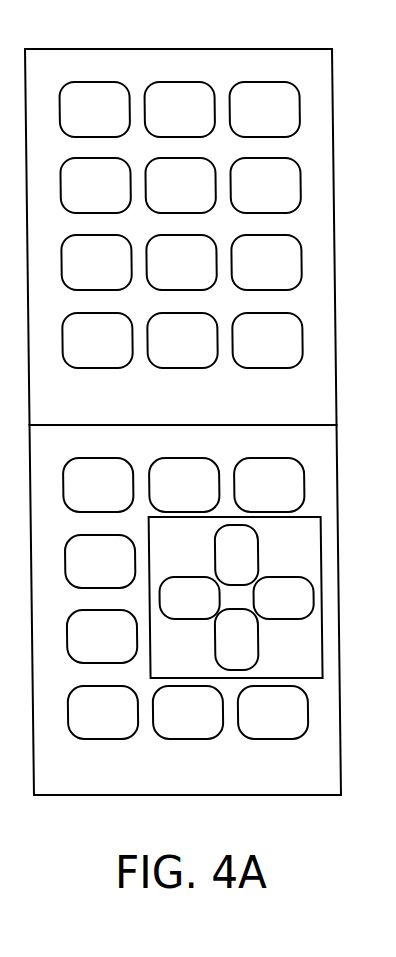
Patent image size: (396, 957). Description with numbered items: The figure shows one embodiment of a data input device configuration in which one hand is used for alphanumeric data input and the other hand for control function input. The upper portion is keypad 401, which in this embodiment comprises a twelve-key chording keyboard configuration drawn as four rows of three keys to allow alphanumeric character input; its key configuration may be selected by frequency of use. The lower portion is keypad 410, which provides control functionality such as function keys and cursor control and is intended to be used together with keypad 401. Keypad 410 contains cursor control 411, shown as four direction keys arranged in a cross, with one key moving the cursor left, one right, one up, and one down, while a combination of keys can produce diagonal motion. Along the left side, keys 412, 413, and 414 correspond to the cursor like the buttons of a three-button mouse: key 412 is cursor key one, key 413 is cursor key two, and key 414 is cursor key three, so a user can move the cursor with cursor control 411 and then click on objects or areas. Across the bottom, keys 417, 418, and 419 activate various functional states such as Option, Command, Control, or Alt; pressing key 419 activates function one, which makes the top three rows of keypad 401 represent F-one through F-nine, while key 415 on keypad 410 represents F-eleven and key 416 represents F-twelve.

The keypad 401 is at (288, 419).
The keypad 410 is at (293, 789).
The cursor control 411 is at (318, 673).
The key 412 is at (76, 498).
The key 413 is at (78, 574).
The key 414 is at (79, 650).
The key 415 is at (162, 498).
The key 416 is at (247, 498).
The key 417 is at (80, 726).
The key 418 is at (210, 726).
The key 419 is at (250, 726).